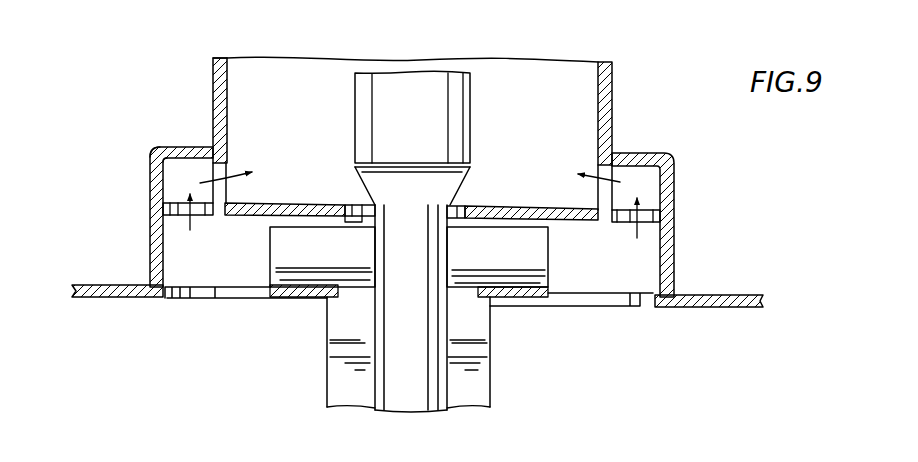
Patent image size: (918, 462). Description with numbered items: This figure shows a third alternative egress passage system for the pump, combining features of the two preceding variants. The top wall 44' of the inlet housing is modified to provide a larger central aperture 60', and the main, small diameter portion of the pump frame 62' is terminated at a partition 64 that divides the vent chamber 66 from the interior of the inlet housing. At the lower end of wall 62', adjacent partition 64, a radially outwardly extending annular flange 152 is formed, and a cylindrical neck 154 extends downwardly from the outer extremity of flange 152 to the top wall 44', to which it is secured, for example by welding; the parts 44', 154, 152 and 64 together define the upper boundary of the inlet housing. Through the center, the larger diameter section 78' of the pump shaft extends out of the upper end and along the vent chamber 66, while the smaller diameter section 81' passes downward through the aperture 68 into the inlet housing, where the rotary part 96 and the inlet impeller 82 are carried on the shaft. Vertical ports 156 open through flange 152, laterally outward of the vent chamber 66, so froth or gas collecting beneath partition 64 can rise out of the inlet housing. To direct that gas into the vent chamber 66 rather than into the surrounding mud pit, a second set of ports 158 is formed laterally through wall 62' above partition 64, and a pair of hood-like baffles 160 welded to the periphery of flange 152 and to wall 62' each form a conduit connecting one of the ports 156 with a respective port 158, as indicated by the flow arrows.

The top wall 44' is at (430, 283).
The central aperture 60' is at (425, 319).
The pump frame 62' is at (447, 128).
The partition 64 is at (503, 212).
The vent chamber 66 is at (230, 78).
The aperture 68 is at (352, 222).
The larger diameter section 78' is at (439, 138).
The smaller diameter shaft section 81' is at (463, 313).
The inlet impeller 82 is at (283, 262).
The rotary part 96 is at (330, 368).
The annular flange 152 is at (618, 226).
The cylindrical neck wall 154 is at (150, 270).
The ports 156 is at (185, 216).
The second set of ports 158 is at (222, 174).
The hood-like baffles 160 is at (170, 148).